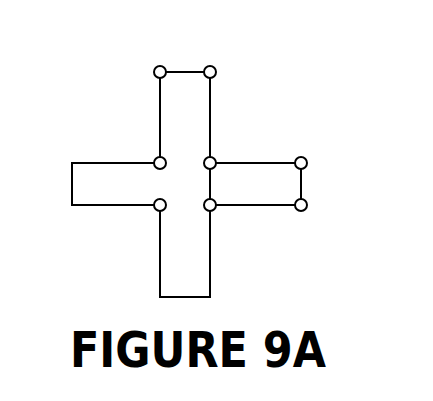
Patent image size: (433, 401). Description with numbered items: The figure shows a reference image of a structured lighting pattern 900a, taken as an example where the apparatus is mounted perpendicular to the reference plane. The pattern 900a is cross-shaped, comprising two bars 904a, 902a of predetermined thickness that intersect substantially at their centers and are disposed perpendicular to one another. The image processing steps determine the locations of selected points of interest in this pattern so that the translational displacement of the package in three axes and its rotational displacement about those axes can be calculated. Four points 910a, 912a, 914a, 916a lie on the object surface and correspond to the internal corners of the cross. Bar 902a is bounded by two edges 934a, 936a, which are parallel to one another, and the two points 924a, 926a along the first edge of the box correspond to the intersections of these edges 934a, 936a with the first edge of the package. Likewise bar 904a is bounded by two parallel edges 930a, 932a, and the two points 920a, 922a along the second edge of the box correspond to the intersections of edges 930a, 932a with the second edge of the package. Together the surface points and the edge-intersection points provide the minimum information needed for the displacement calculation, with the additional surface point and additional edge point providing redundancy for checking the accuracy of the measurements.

The pattern 900a is at (350, 28).
The bar 902a is at (272, 250).
The bar 904a is at (86, 68).
The point on object surface 910a is at (155, 160).
The point on object surface 912a is at (215, 159).
The point on object surface 914a is at (213, 210).
The point on object surface 916a is at (156, 208).
The point along second edge 920a is at (160, 66).
The point along second edge 922a is at (213, 67).
The point along first edge 924a is at (307, 163).
The point along first edge 926a is at (307, 204).
The edge of bar 930a is at (160, 127).
The edge of bar 932a is at (211, 107).
The edge of bar 934a is at (296, 164).
The edge of bar 936a is at (273, 207).